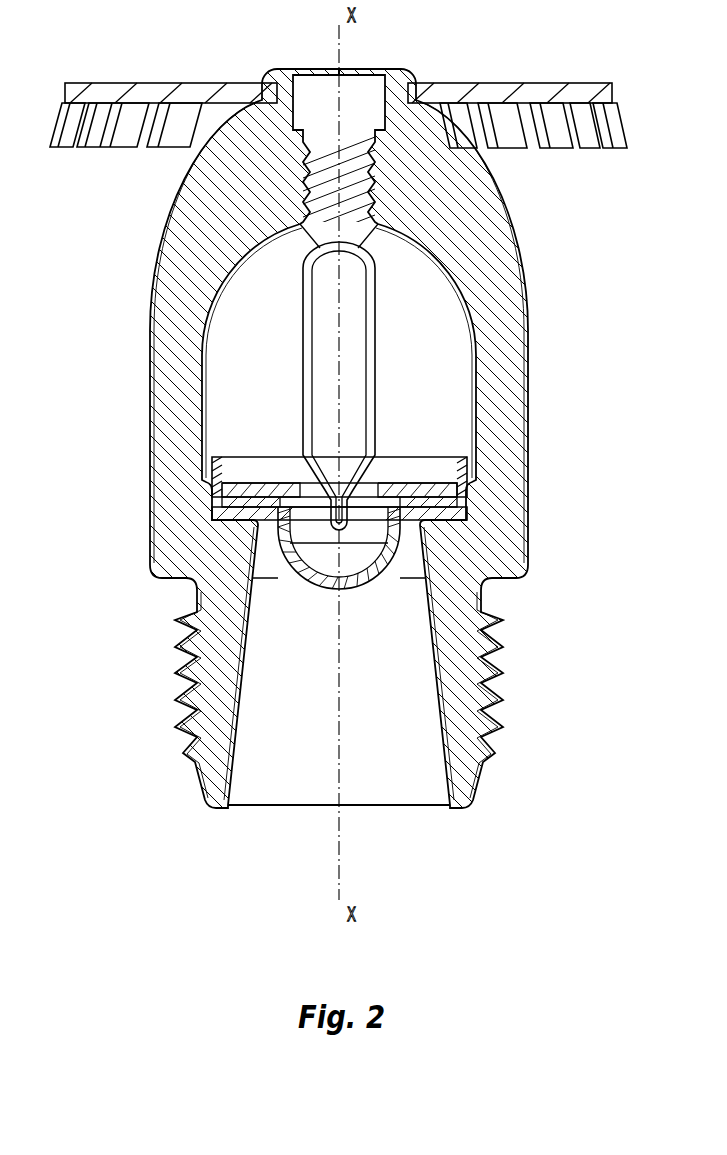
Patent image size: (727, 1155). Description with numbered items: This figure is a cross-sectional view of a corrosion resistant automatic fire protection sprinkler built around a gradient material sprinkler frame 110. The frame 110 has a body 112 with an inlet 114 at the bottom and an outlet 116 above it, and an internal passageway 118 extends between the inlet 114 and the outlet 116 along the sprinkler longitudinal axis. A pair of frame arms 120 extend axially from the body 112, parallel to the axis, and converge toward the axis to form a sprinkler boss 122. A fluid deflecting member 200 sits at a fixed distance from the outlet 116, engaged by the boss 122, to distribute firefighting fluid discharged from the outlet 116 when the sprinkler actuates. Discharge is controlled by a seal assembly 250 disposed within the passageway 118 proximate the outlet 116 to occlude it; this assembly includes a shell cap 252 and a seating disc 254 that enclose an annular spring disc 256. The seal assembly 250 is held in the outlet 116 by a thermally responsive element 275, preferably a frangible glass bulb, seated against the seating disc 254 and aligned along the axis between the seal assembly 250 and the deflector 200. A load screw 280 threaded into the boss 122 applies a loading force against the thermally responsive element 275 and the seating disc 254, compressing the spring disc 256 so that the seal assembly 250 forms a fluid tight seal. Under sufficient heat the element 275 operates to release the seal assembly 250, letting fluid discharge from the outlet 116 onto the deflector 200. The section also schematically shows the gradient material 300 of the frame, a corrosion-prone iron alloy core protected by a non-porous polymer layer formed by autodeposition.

The fluid deflecting member 200 is at (152, 82).
The gradient material sprinkler frame 110 is at (187, 200).
The frame arms 120 is at (150, 243).
The sprinkler boss 122 is at (395, 160).
The load screw 280 is at (398, 232).
The gradient material 300 is at (534, 312).
The thermally responsive element 275 is at (380, 368).
The seal assembly 250 is at (428, 477).
The shell cap 252 is at (470, 476).
The seating disc 254 is at (470, 491).
The annular spring disc 256 is at (397, 525).
The outlet 116 is at (272, 536).
The body 112 is at (177, 658).
The internal passageway 118 is at (407, 771).
The inlet 114 is at (398, 813).